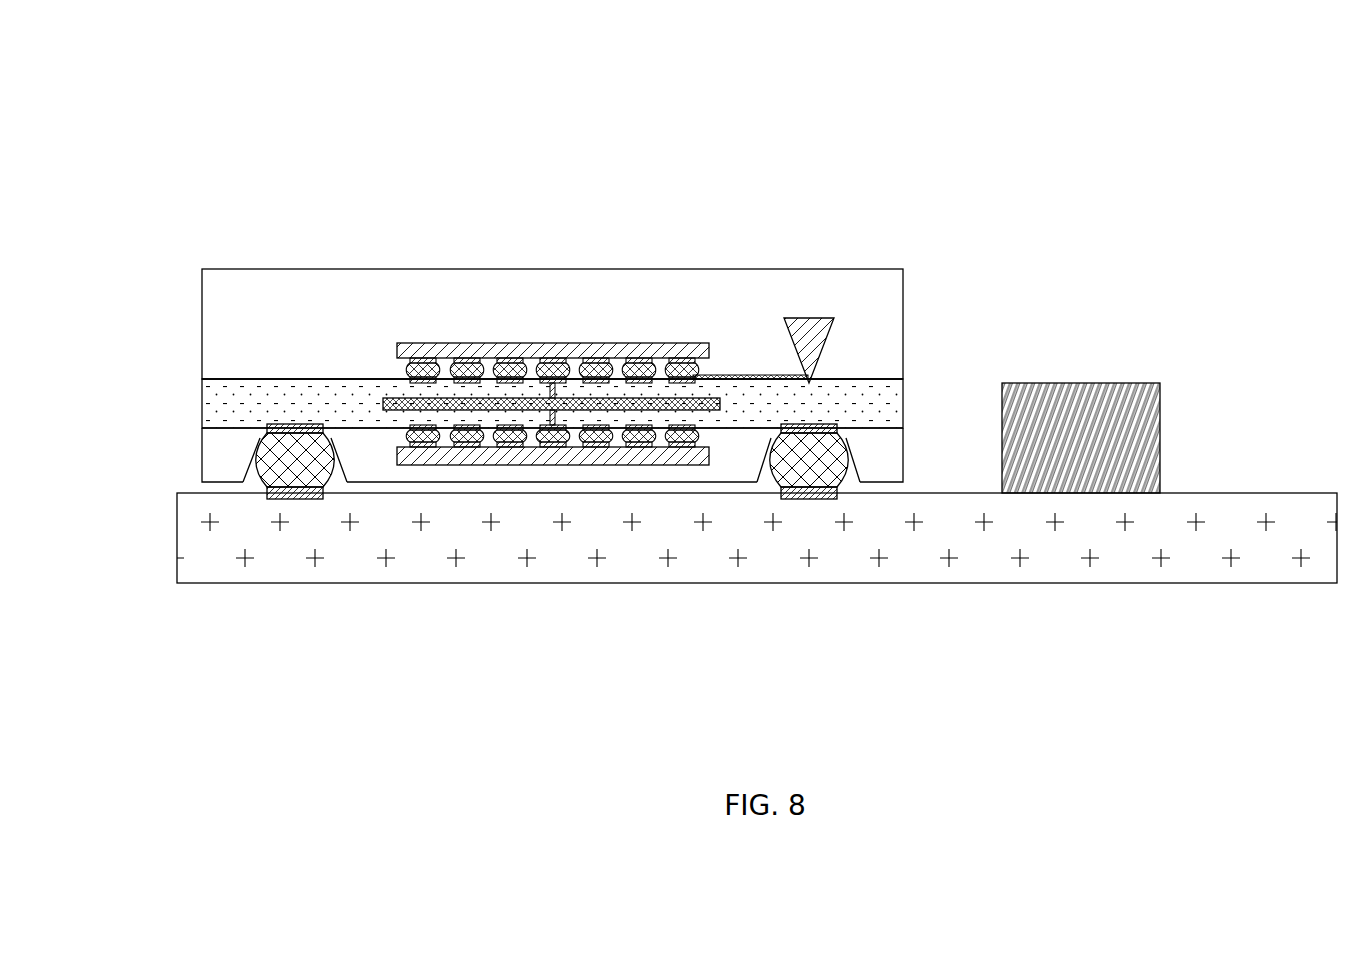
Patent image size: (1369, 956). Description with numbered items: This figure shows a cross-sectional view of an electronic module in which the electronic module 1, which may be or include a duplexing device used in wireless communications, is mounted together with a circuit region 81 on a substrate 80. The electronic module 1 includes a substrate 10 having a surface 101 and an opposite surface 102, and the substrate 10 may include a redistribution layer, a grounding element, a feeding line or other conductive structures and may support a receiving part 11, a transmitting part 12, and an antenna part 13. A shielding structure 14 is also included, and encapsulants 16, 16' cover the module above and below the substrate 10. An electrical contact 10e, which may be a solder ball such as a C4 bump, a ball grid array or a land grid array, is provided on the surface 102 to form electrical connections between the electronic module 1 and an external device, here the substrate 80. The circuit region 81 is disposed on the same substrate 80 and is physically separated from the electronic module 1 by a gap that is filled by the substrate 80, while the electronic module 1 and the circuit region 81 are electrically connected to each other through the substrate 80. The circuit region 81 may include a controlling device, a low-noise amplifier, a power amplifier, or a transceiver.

The electronic module 1 is at (530, 124).
The substrate 10 is at (222, 413).
The surface 101 is at (243, 379).
The surface 102 is at (237, 430).
The electrical contact 10e is at (809, 455).
The receiving part 11 is at (533, 353).
The transmitting part 12 is at (545, 452).
The antenna part 13 is at (813, 327).
The shielding structure 14 is at (387, 400).
The encapsulant 16 is at (499, 324).
The encapsulant 16' is at (495, 455).
The substrate 80 is at (197, 545).
The circuit region 81 is at (1083, 390).